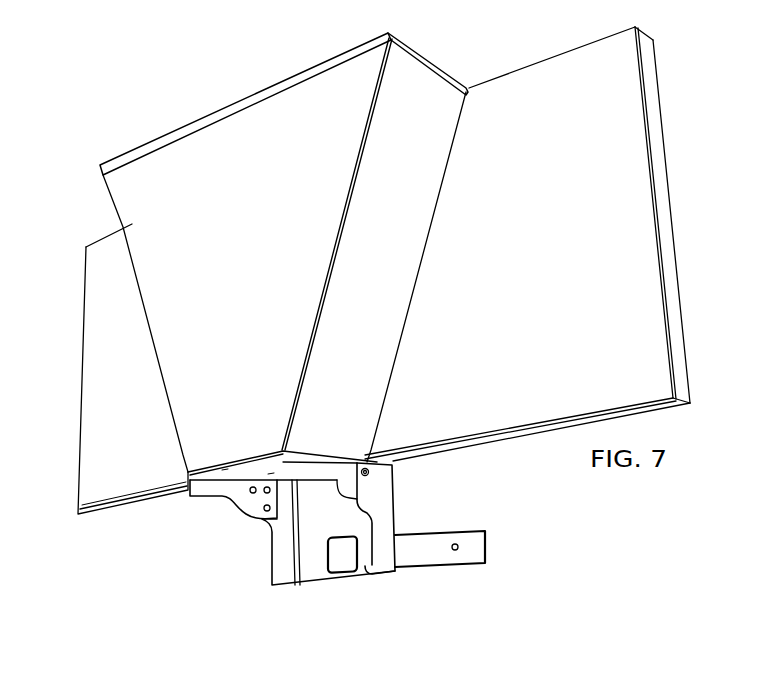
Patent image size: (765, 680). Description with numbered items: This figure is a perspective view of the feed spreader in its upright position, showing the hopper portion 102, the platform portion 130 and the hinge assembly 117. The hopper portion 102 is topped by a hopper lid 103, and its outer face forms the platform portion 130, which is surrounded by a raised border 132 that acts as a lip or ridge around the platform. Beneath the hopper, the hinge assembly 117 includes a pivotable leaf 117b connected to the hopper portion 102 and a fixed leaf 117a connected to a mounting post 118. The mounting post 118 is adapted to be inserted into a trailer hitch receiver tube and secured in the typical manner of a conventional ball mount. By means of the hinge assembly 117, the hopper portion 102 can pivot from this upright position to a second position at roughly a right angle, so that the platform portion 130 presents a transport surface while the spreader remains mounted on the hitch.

The hopper portion 102 is at (118, 225).
The hopper lid 103 is at (155, 145).
The platform portion 130 is at (530, 245).
The raised border 132 is at (645, 50).
The hinge assembly 117 is at (243, 533).
The fixed leaf 117a is at (267, 570).
The pivotable leaf 117b is at (222, 492).
The mounting post 118 is at (468, 552).